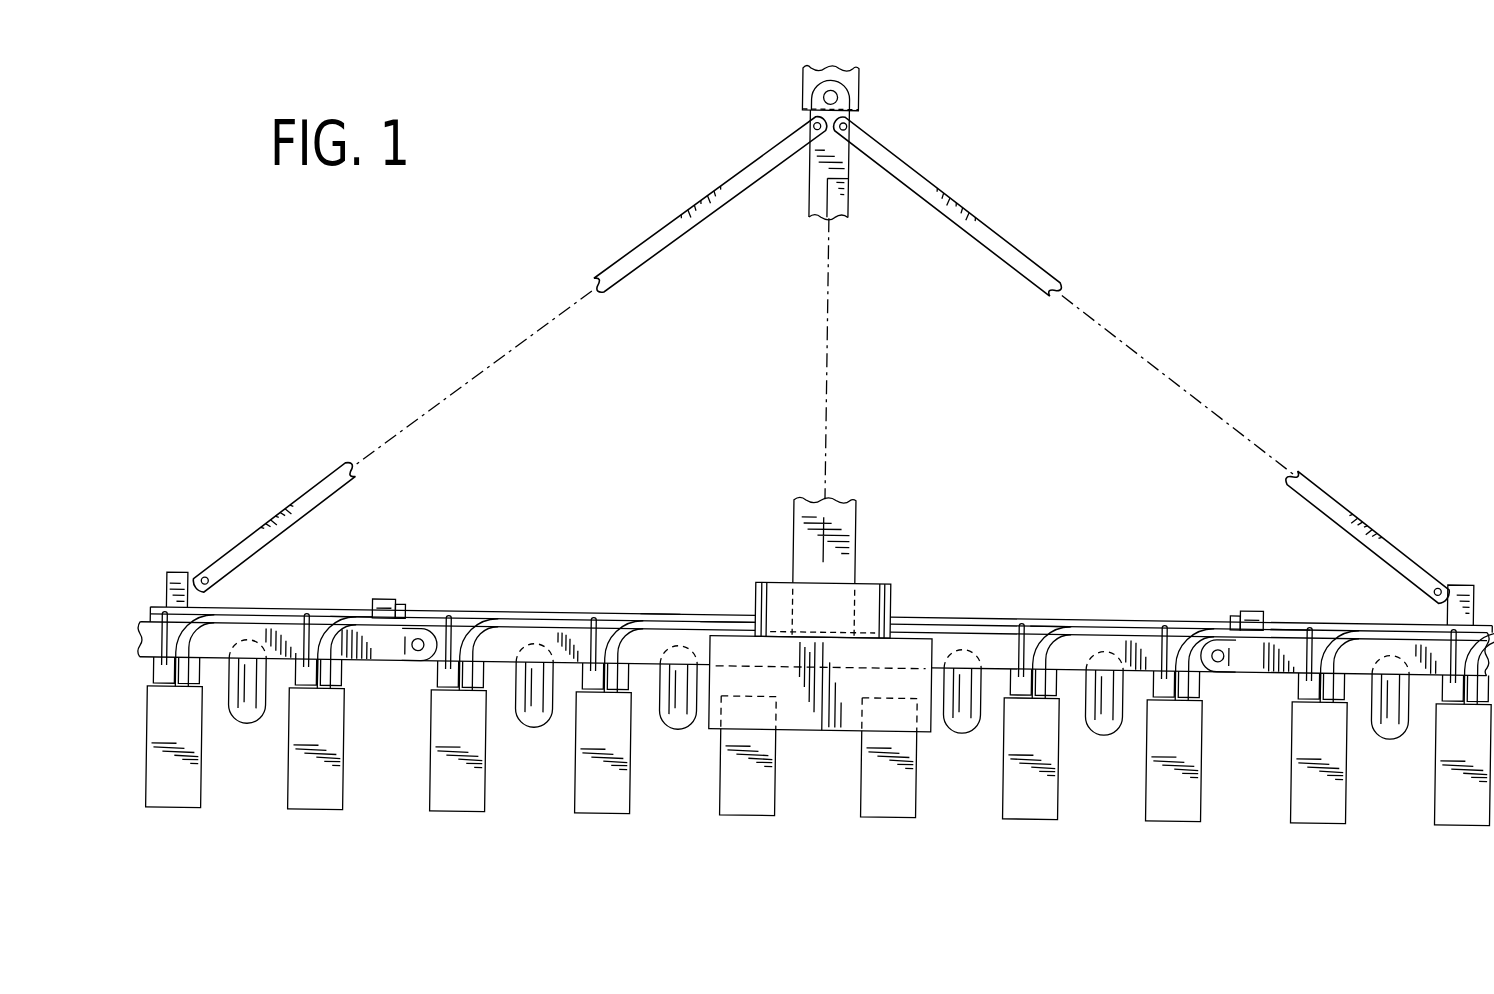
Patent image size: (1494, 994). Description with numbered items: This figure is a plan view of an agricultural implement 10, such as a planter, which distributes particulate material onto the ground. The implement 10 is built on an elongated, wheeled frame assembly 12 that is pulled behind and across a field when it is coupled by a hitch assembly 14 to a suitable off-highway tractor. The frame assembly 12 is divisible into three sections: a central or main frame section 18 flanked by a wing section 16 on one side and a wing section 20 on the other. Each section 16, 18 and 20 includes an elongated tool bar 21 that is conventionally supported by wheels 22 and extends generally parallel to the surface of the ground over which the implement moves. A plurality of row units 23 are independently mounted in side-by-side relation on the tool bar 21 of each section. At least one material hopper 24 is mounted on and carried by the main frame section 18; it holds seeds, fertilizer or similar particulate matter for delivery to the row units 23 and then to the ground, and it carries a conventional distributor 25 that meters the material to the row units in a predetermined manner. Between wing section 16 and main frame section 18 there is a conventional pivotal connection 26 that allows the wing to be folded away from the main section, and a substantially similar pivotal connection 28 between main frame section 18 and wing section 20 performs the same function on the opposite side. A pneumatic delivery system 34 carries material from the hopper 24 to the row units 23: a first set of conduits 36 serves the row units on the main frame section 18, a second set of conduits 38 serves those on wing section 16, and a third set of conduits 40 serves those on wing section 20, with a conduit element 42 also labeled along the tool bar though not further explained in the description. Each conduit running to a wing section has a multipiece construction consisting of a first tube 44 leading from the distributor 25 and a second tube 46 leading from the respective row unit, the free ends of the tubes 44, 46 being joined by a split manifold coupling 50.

The agricultural implement 10 is at (1214, 206).
The frame assembly 12 is at (870, 512).
The hitch assembly 14 is at (788, 103).
The wing section 16 is at (272, 612).
The main frame section 18 is at (659, 616).
The wing section 20 is at (1345, 628).
The tool bar 21 is at (222, 637).
The wheels 22 is at (248, 733).
The row units 23 is at (188, 800).
The material hopper 24 is at (820, 734).
The distributor 25 is at (895, 597).
The pivotal connection 26 is at (426, 643).
The pivotal connection 28 is at (1210, 636).
The pneumatic delivery system 34 is at (1044, 600).
The first set of conduits 36 is at (711, 610).
The second set of conduits 38 is at (339, 604).
The third set of conduits 40 is at (1291, 604).
The supply hose 42 is at (565, 619).
The first tube 44 is at (421, 642).
The second tube 46 is at (290, 614).
The split manifold coupling 50 is at (386, 602).